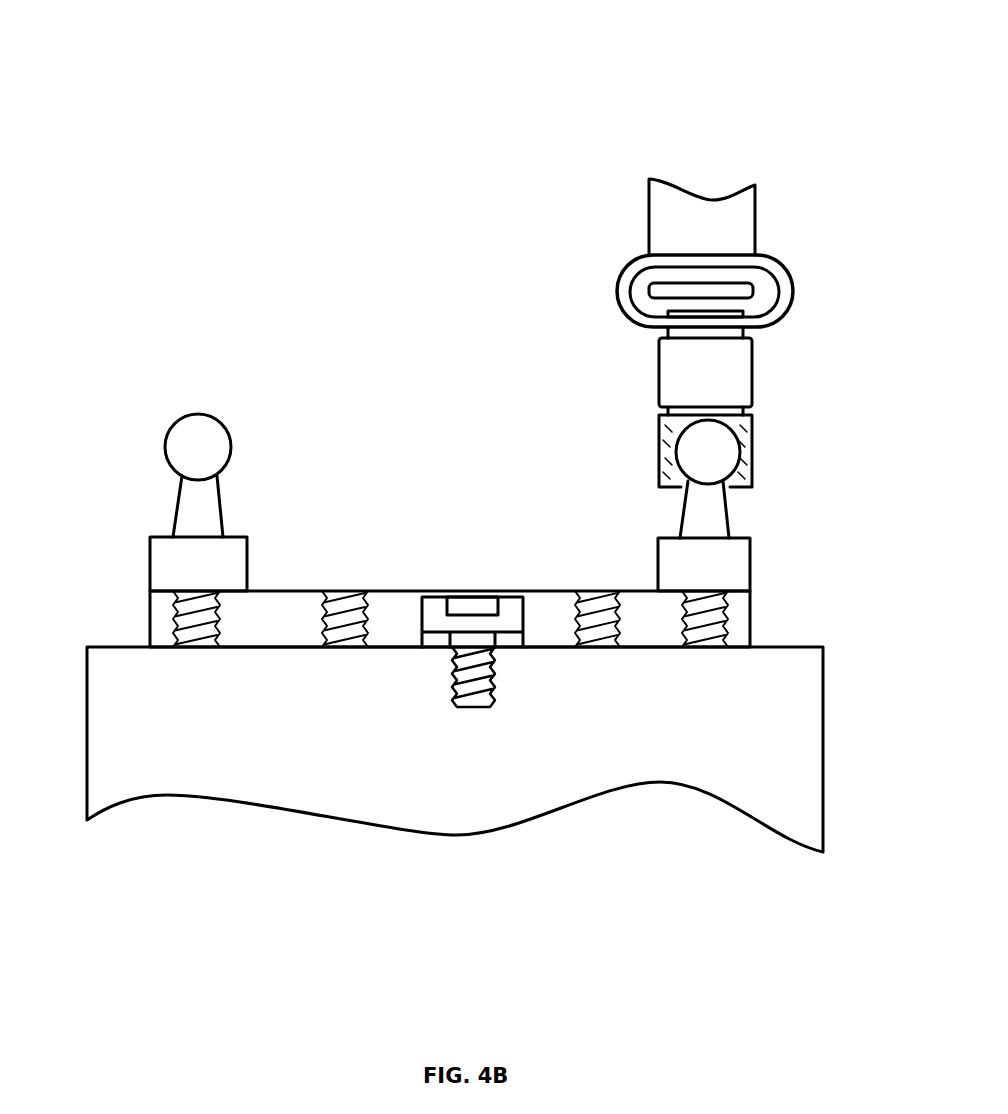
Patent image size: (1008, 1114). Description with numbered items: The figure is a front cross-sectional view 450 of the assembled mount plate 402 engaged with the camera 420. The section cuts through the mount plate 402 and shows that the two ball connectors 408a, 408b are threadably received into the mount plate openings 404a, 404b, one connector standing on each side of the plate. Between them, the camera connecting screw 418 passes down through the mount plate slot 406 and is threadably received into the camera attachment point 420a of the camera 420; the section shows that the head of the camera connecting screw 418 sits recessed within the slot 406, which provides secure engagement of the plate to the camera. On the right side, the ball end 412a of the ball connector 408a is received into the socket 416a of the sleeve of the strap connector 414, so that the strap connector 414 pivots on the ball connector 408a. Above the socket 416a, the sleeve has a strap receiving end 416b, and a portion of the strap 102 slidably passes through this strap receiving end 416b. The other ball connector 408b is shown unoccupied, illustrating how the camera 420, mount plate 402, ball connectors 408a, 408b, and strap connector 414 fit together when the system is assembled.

The cross-sectional view 450 is at (360, 67).
The strap 102 is at (774, 225).
The strap receiving end 416b is at (601, 280).
The strap connector 414 is at (542, 363).
The socket 416a is at (641, 450).
The ball end 412a is at (751, 459).
The ball connector 408a is at (749, 515).
The ball connector 408b is at (259, 503).
The mount plate 402 is at (138, 623).
The mount plate opening 404a is at (723, 631).
The mount plate opening 404b is at (216, 620).
The mount plate slot 406 is at (520, 588).
The camera connecting screw 418 is at (470, 606).
The camera attachment point 420a is at (496, 710).
The camera 420 is at (462, 855).